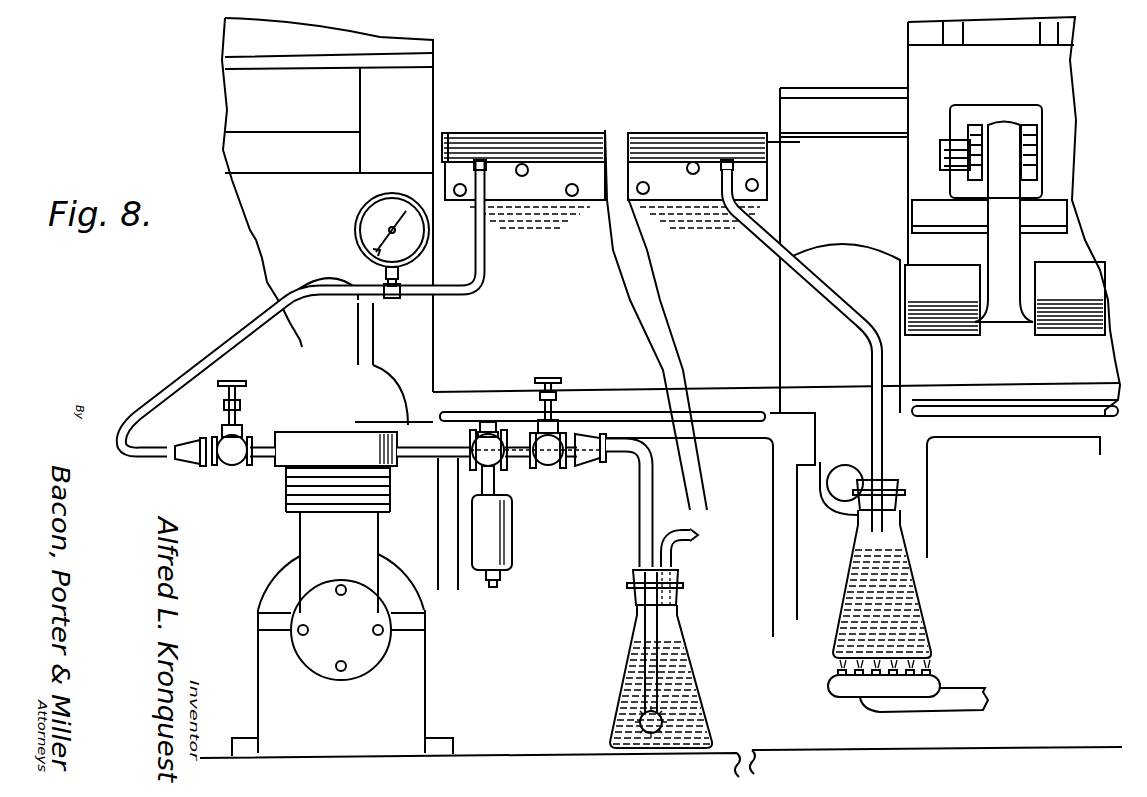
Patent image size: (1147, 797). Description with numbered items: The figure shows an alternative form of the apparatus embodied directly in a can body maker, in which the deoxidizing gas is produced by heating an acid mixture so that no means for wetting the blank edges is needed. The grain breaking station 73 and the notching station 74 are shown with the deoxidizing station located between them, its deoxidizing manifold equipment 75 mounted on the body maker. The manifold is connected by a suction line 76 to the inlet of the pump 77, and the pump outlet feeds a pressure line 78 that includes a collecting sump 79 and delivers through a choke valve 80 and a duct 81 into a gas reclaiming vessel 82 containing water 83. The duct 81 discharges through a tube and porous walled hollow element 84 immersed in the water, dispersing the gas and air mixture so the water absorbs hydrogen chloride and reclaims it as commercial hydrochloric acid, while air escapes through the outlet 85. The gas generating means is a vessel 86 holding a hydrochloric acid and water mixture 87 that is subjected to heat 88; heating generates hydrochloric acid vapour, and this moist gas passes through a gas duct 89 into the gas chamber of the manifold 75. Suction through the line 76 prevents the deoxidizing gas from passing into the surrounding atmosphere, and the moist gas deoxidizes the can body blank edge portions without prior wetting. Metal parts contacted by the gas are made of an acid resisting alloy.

The grain breaking station 73 is at (410, 80).
The notching station 74 is at (923, 68).
The deoxidizing manifold equipment 75 is at (569, 132).
The suction line 76 is at (485, 264).
The pump 77 is at (300, 533).
The pressure line 78 is at (428, 455).
The collecting sump 79 is at (506, 545).
The choke valve 80 is at (547, 457).
The duct 81 is at (643, 505).
The gas reclaiming vessel 82 is at (632, 688).
The water 83 is at (640, 665).
The porous walled hollow element 84 is at (640, 718).
The outlet 85 is at (690, 543).
The vessel 86 is at (925, 612).
The hydrochloric acid and water mixture 87 is at (915, 576).
The heat 88 is at (930, 687).
The gas duct 89 is at (808, 272).